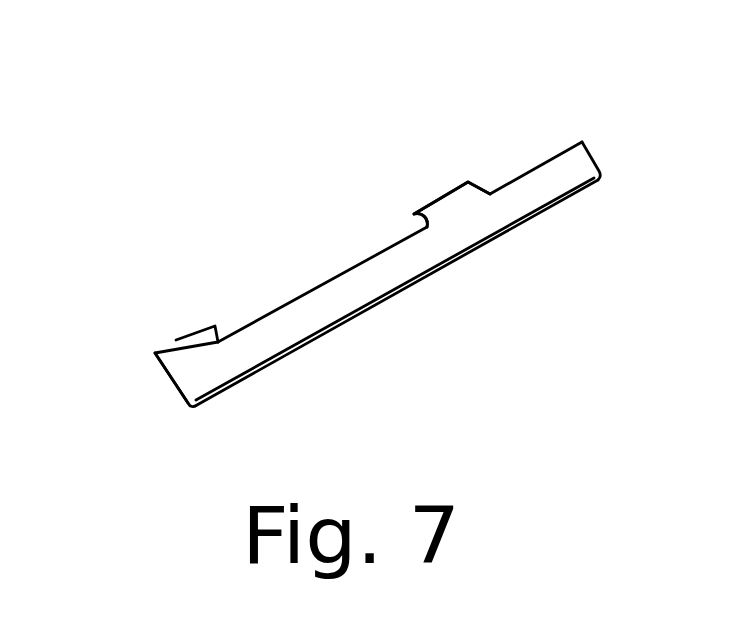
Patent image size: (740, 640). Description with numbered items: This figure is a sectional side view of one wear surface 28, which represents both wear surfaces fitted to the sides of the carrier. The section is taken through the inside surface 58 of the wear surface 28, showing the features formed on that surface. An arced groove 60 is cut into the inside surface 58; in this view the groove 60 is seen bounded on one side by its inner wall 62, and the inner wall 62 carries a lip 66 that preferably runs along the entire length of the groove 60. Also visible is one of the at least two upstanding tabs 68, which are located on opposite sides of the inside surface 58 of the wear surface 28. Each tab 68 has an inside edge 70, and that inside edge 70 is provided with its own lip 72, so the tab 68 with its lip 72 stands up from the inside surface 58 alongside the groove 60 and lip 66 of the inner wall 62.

The wear surface 28 is at (500, 100).
The inside surface 58 is at (316, 149).
The arced groove 60 is at (233, 264).
The inner wall 62 is at (176, 340).
The lip 66 is at (215, 326).
The upstanding tab 68 is at (450, 202).
The inside edge 70 is at (427, 222).
The lip 72 is at (412, 220).